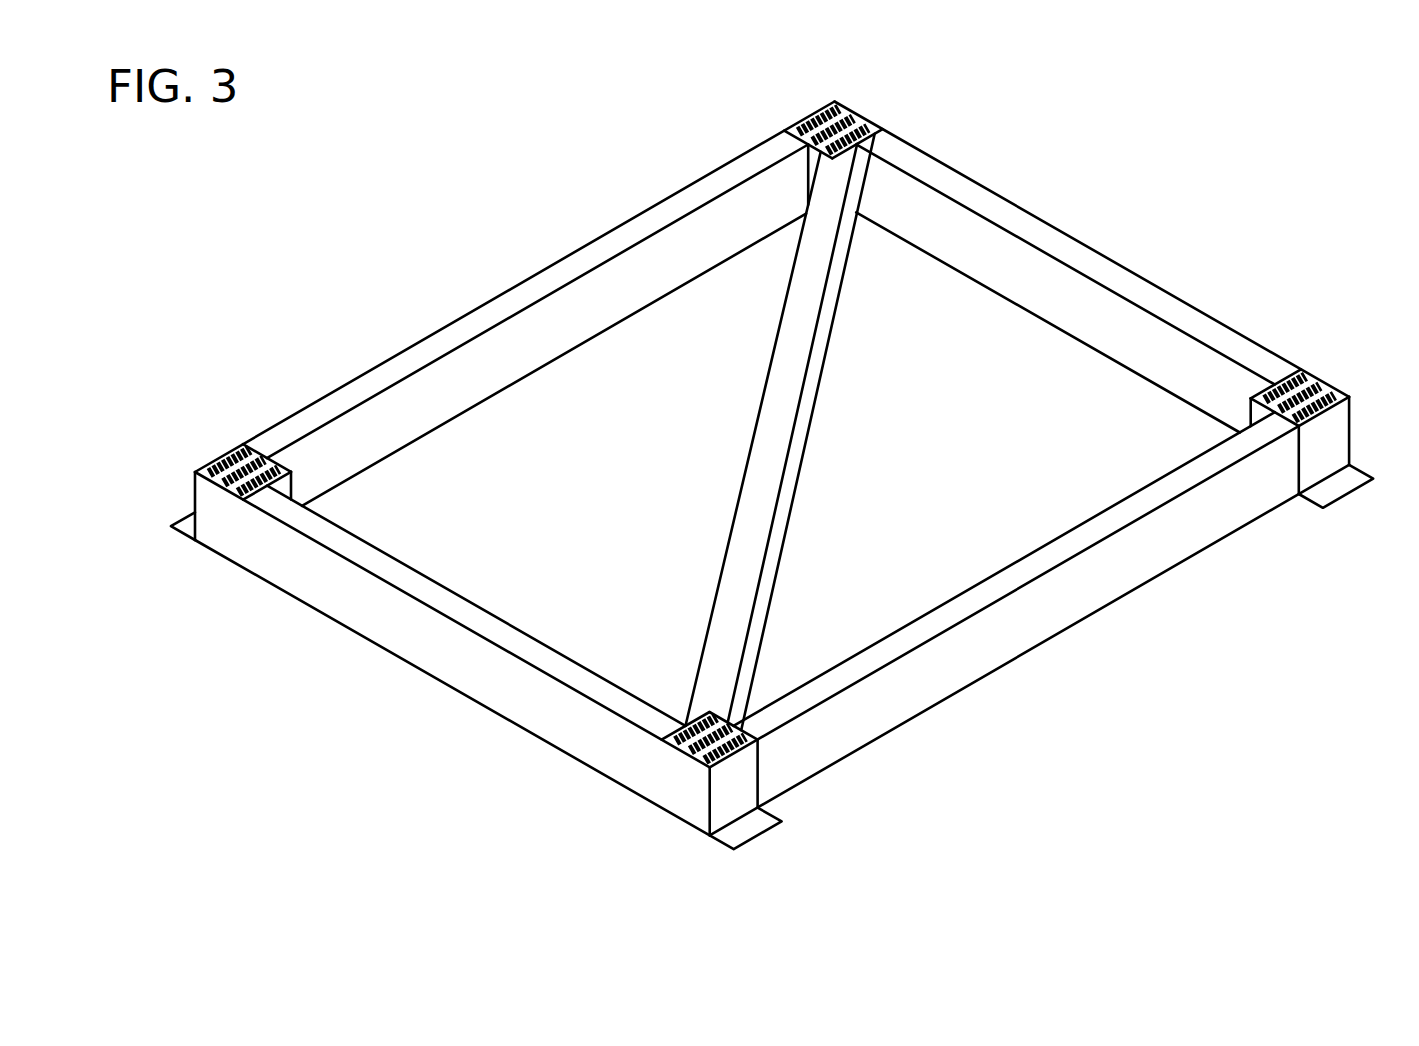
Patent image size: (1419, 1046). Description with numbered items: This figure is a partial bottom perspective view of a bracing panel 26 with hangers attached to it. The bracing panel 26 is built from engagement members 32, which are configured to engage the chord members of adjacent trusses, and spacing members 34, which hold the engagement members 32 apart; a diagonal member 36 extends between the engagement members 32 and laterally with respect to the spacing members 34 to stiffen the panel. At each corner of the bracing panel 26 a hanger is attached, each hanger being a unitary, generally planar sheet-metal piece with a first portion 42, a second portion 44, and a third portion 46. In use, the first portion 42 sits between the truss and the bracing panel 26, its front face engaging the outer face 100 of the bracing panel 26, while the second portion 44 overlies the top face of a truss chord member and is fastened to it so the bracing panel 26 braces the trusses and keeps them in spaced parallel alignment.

The bracing panel 26 is at (372, 654).
The engagement member 32 is at (514, 298).
The spacing member 34 is at (1072, 238).
The diagonal member 36 is at (771, 444).
The first portion 42 is at (1340, 440).
The second portion 44 is at (186, 522).
The third portion 46 is at (817, 135).
The outer face 100 is at (1000, 642).